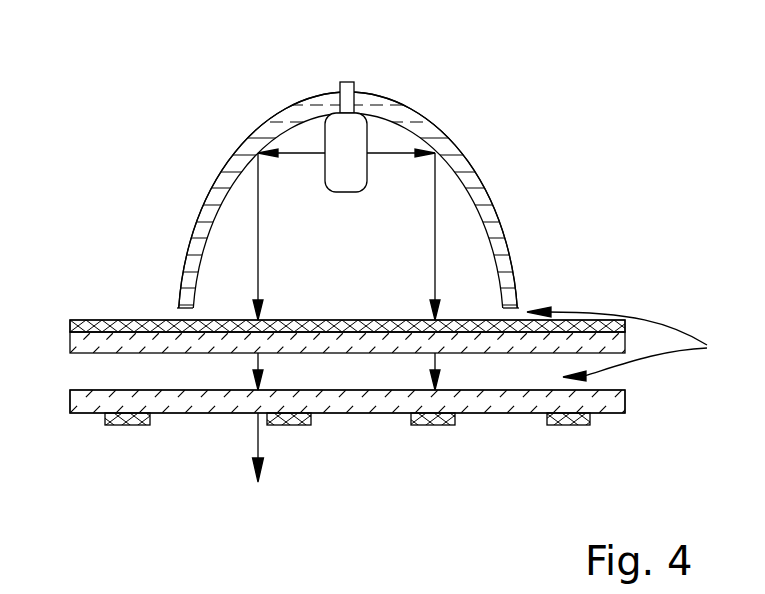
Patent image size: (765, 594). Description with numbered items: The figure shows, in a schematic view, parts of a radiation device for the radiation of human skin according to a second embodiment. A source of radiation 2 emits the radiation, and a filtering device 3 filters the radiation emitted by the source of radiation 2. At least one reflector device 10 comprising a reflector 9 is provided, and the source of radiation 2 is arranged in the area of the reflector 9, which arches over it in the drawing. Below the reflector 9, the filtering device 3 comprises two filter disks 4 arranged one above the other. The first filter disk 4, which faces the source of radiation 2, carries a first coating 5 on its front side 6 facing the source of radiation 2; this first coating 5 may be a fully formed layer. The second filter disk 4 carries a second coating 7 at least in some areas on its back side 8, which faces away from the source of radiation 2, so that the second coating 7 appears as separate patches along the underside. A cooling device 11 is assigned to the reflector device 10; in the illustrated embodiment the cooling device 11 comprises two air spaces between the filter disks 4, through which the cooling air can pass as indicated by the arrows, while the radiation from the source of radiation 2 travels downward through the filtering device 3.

The source of radiation 2 is at (380, 115).
The filtering device 3 is at (384, 369).
The filter disk 4 is at (80, 403).
The first coating 5 is at (305, 321).
The front side 6 is at (362, 322).
The second coating 7 is at (548, 424).
The back side 8 is at (349, 413).
The reflector 9 is at (455, 160).
The reflector device 10 is at (510, 224).
The cooling device 11 is at (634, 344).